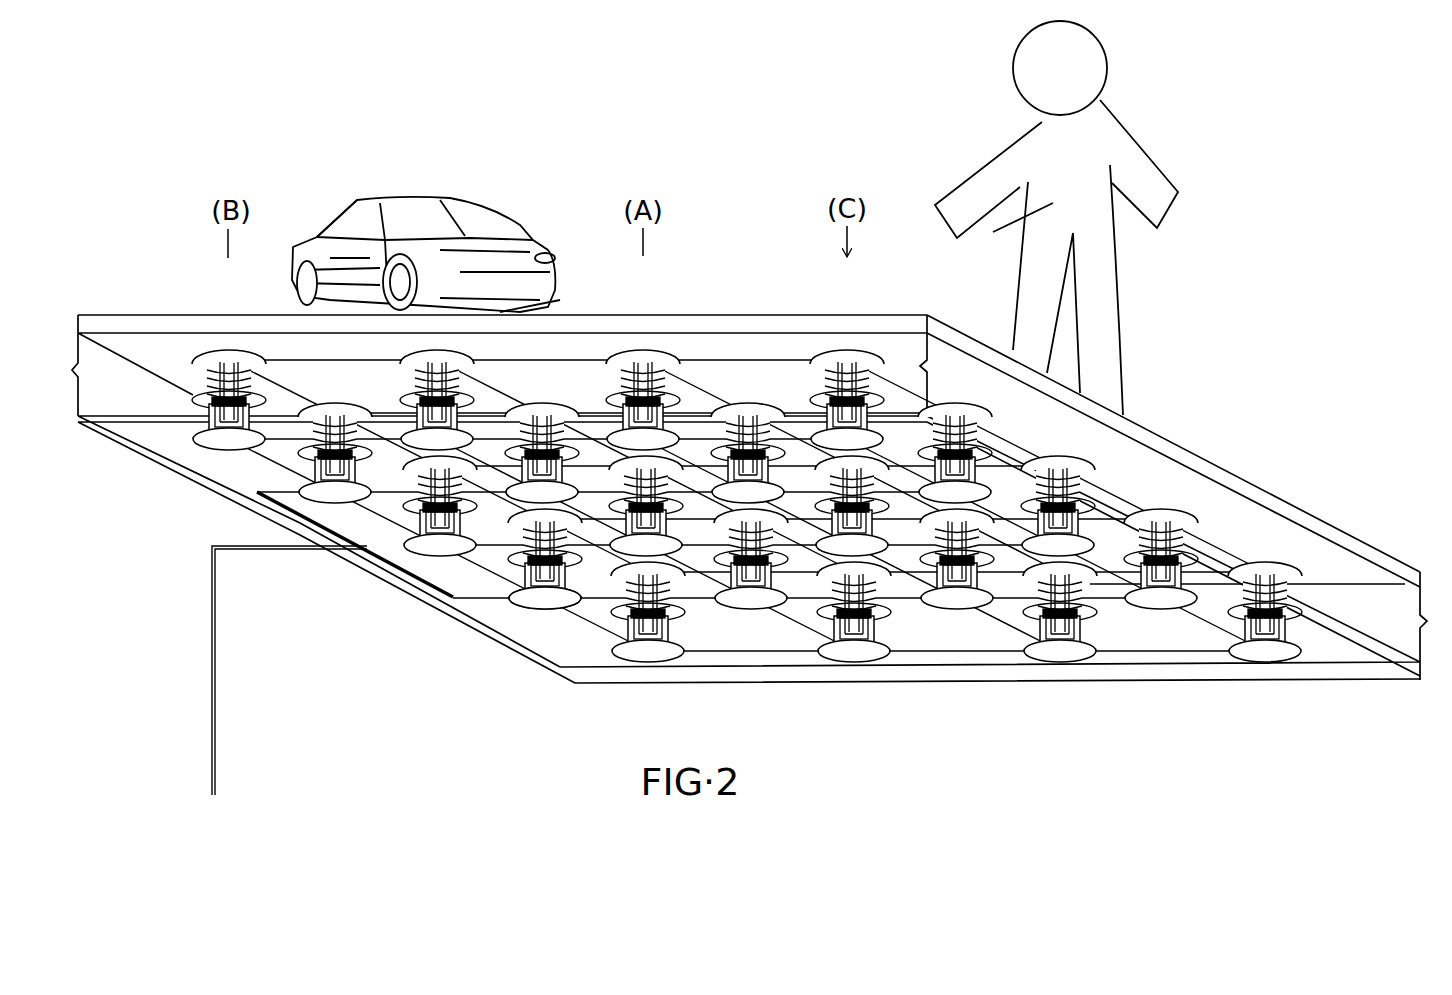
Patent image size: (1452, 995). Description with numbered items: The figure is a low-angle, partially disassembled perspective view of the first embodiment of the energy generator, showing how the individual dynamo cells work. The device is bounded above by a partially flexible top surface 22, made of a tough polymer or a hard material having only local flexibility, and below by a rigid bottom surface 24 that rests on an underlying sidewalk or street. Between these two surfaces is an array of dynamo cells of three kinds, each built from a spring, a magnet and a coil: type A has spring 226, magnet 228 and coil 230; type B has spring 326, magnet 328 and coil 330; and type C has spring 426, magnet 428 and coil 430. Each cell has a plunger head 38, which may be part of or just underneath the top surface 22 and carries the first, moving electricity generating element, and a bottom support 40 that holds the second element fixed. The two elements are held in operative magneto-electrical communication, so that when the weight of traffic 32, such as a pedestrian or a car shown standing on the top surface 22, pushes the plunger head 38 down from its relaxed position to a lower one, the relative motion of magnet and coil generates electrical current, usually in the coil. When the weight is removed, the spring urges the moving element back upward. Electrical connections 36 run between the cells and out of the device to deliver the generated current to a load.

The partially flexible top surface 22 is at (1123, 427).
The bottom surface 24 is at (1083, 680).
The traffic 32 is at (408, 187).
The electrical connection 36 is at (240, 550).
The plunger head 38 is at (940, 403).
The bottom support 40 is at (527, 601).
The spring 226 is at (660, 380).
The magnet 228 is at (643, 378).
The coil 230 is at (628, 398).
The spring 326 is at (232, 378).
The magnet 328 is at (224, 380).
The coil 330 is at (212, 390).
The spring 426 is at (868, 382).
The magnet 428 is at (849, 376).
The coil 430 is at (837, 382).